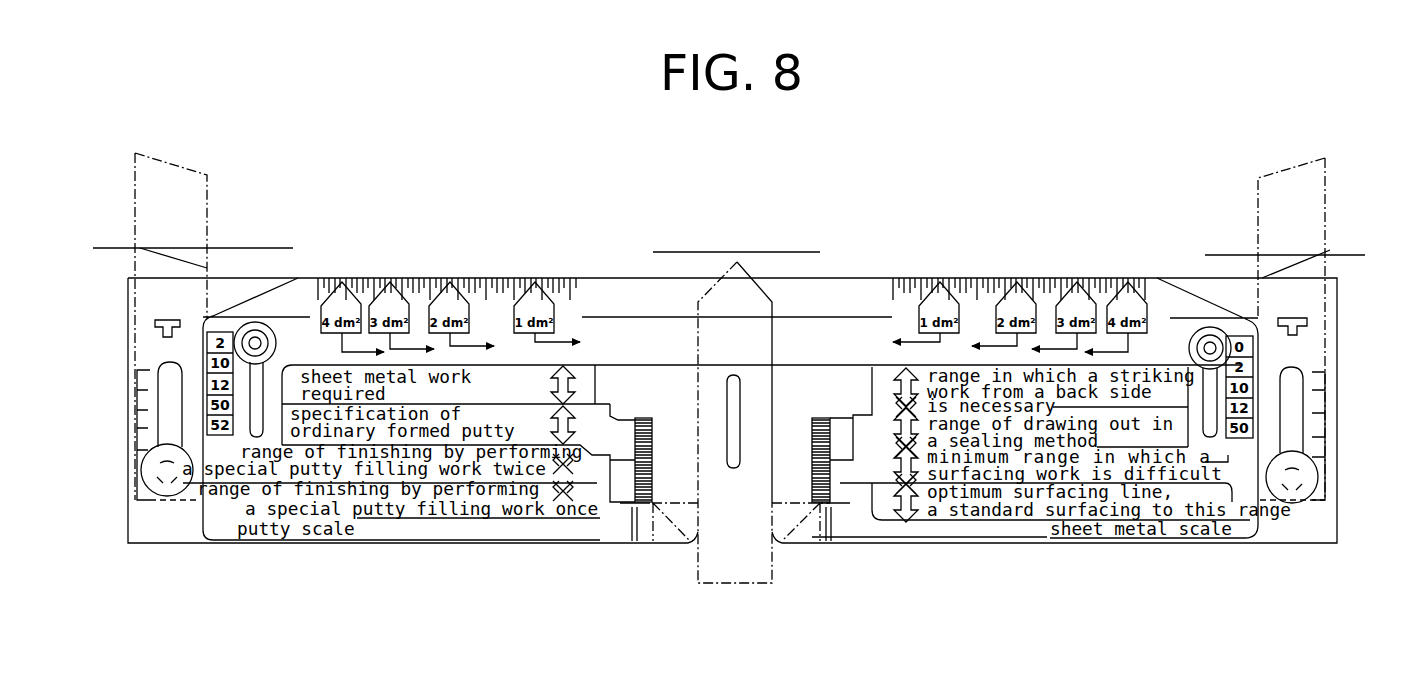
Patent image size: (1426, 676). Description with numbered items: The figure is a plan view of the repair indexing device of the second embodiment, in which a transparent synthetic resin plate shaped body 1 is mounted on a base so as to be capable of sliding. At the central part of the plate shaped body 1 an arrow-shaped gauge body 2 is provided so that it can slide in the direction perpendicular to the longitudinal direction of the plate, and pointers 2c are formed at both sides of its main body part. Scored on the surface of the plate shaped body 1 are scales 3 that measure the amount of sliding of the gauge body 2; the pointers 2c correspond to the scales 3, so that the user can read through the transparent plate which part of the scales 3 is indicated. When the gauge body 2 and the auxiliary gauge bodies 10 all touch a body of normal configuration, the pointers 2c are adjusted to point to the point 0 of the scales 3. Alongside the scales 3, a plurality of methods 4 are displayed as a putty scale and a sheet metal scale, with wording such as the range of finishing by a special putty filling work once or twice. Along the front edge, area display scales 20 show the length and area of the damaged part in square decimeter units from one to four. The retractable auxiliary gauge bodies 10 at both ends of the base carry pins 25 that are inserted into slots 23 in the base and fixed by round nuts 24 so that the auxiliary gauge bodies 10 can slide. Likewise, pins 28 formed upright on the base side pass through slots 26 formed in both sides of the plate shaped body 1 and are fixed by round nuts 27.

The point of scales 0 is at (731, 245).
The plate shaped body 1 is at (613, 523).
The gauge body 2 is at (725, 563).
The pointers 2c is at (675, 513).
The scales 3 is at (662, 428).
The methods 4 is at (533, 470).
The auxiliary gauge bodies 10 is at (147, 262).
The area display scales 20 is at (580, 299).
The slots 23 is at (150, 418).
The round nuts 24 is at (150, 463).
The pins 25 is at (177, 483).
The slots 26 is at (249, 405).
The round nuts 27 is at (282, 336).
The pins 28 is at (251, 322).